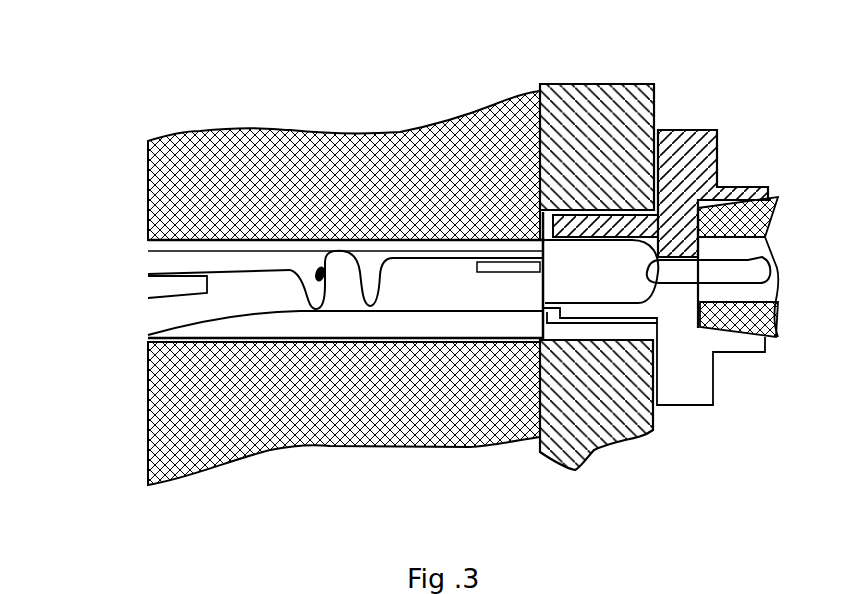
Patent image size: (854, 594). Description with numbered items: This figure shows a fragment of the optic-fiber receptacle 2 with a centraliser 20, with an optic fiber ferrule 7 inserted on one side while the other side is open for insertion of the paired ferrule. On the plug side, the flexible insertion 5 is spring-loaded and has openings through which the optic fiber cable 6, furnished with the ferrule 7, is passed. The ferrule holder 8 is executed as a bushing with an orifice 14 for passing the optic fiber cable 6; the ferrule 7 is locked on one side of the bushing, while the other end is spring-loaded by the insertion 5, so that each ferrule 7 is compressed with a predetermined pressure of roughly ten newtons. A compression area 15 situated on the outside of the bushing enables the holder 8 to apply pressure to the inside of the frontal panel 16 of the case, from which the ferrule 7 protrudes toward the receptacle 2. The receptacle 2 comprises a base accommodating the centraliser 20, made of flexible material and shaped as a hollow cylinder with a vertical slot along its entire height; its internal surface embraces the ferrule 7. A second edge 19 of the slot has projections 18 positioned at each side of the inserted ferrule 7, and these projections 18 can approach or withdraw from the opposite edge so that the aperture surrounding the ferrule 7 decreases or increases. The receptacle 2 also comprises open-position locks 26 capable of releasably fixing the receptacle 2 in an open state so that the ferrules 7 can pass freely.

The receptacle 2 is at (305, 405).
The centraliser 20 is at (343, 270).
The second edge 19 is at (180, 272).
The open-position lock 26 is at (220, 262).
The projection 18 is at (180, 292).
The orifice 14 is at (683, 320).
The frontal panel 16 is at (612, 398).
The ferrule holder 8 is at (673, 130).
The ferrule 7 is at (590, 273).
The insertion 5 is at (740, 200).
The optic fiber cable 6 is at (715, 272).
The compression area 15 is at (658, 407).